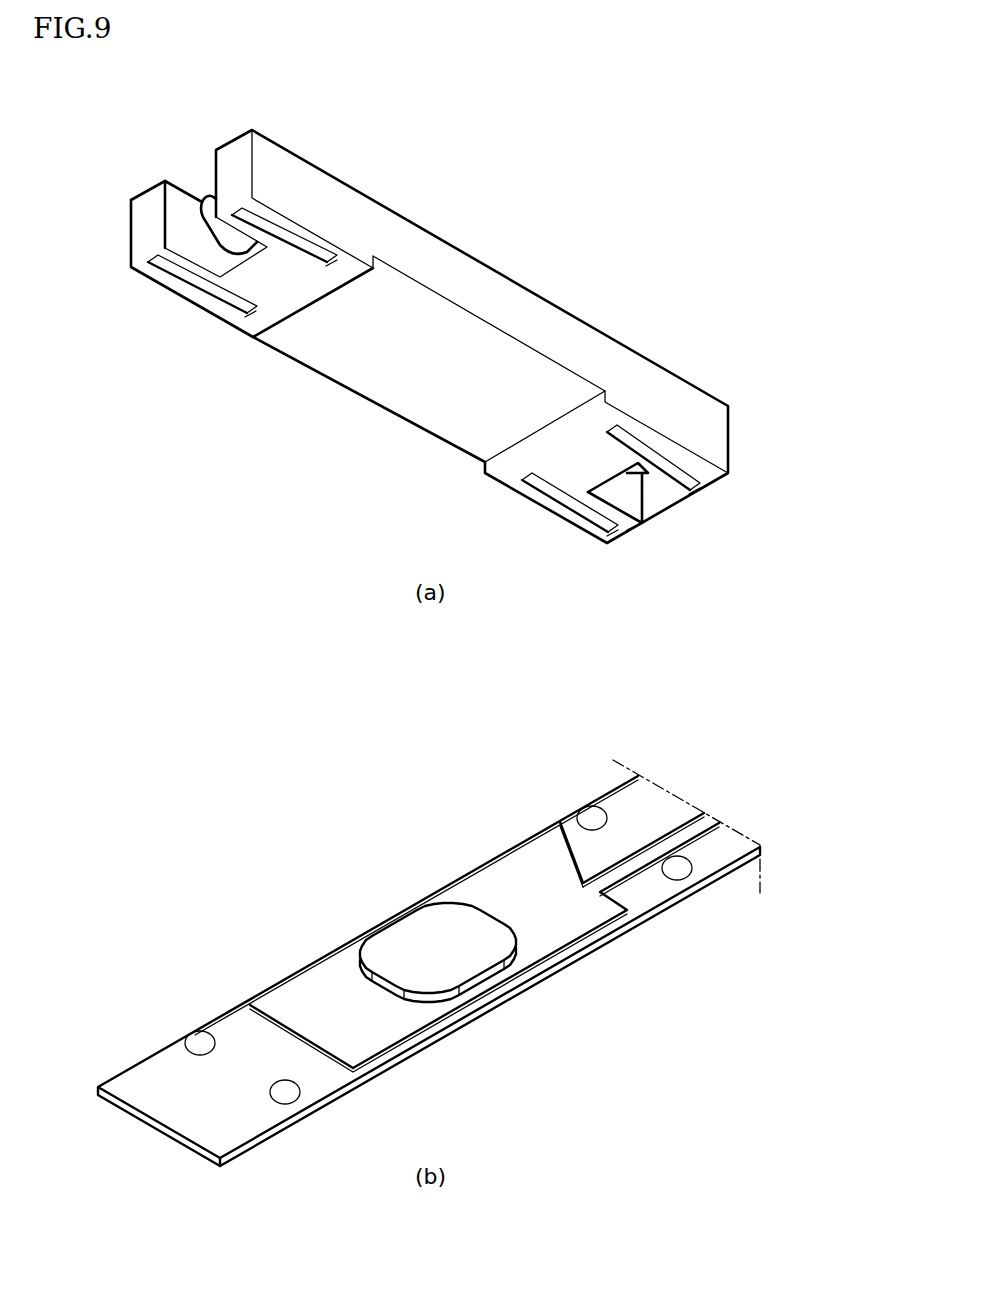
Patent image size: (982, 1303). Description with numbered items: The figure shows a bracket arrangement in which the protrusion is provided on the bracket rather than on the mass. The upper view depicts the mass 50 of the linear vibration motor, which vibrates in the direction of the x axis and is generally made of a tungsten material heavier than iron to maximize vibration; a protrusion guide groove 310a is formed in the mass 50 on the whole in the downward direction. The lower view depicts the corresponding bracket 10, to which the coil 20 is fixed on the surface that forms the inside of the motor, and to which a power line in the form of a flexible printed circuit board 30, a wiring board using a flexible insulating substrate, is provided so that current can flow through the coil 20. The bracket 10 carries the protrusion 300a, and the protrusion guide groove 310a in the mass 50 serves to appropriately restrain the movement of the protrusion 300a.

The bracket 10 is at (368, 931).
The coil 20 is at (482, 982).
The flexible printed circuit board 30 is at (706, 821).
The protrusion 300a is at (284, 1080).
The protrusion guide groove 310a is at (323, 300).
The mass 50 is at (490, 264).